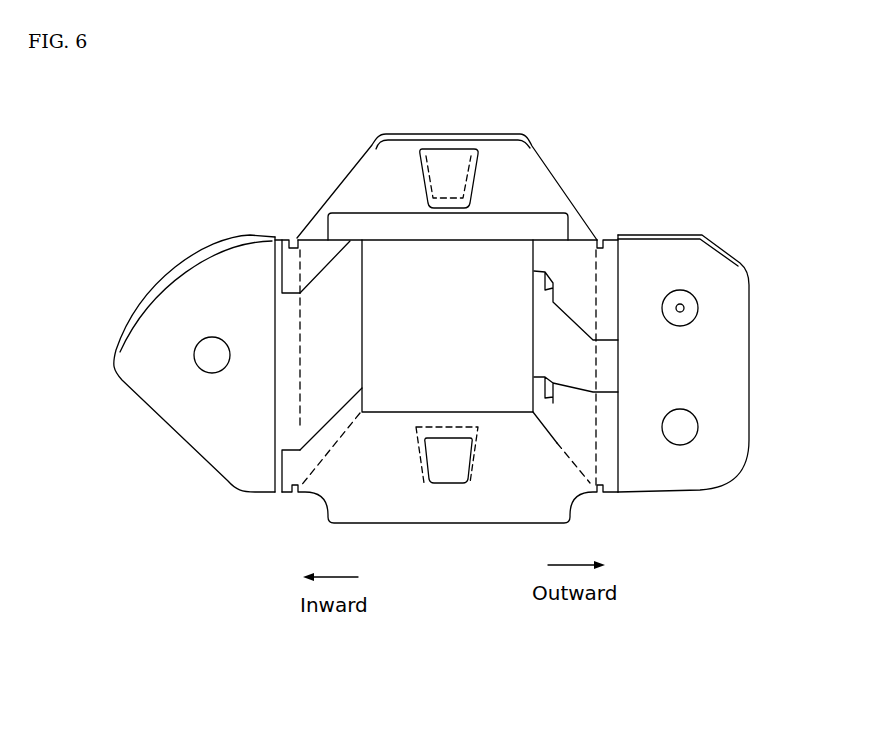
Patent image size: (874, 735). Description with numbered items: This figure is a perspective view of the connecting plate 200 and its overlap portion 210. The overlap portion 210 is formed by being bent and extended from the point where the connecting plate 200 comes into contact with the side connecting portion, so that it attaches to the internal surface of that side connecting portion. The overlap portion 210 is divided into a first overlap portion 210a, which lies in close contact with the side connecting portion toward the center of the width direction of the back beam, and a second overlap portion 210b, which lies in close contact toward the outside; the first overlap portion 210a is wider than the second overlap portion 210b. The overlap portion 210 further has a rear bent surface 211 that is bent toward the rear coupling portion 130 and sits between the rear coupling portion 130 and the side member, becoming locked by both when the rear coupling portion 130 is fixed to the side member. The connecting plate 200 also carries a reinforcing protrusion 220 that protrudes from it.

The connecting plate 200 is at (531, 182).
The reinforcing protrusion 220 is at (447, 162).
The rear bent surface 211 is at (288, 245).
The rear coupling portion 130 is at (137, 345).
The overlap portion 210 is at (439, 449).
The first overlap portion 210a is at (578, 262).
The second overlap portion 210b is at (315, 262).